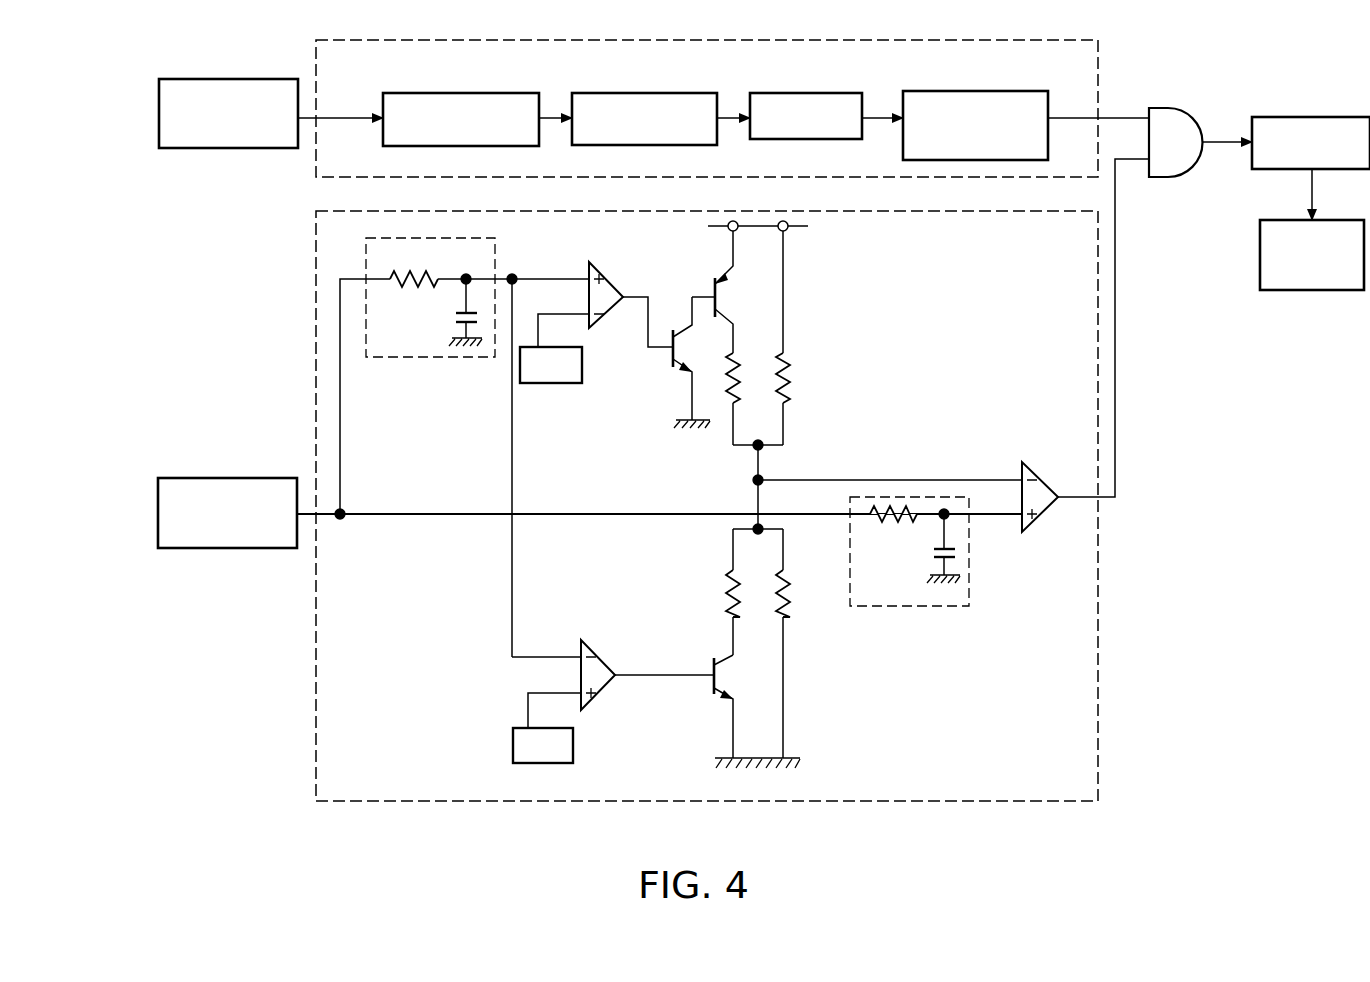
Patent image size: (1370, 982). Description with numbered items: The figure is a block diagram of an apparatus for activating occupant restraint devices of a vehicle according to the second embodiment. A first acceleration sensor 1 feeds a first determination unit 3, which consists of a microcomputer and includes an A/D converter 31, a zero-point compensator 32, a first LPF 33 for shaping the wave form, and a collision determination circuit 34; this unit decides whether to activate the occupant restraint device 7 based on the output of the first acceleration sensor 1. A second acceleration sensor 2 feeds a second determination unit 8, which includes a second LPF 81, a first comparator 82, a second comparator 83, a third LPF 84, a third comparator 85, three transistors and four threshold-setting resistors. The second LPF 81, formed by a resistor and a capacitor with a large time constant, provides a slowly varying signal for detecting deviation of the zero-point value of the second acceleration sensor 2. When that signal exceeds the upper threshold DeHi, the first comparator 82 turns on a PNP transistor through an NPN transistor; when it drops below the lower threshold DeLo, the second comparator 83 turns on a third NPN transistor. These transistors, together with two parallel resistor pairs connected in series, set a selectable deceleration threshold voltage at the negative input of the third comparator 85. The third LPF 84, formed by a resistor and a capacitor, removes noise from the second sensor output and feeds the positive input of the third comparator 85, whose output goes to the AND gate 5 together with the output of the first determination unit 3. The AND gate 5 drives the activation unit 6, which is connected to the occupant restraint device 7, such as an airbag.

The first acceleration sensor 1 is at (230, 79).
The second acceleration sensor 2 is at (228, 478).
The first determination unit 3 is at (708, 40).
The A/D converter 31 is at (455, 93).
The zero-point compensator 32 is at (638, 93).
The first LPF 33 is at (804, 93).
The collision determination circuit 34 is at (968, 91).
The AND gate 5 is at (1163, 108).
The activation unit 6 is at (1312, 117).
The occupant restraint device 7 is at (1308, 290).
The second determination unit 8 is at (903, 801).
The second LPF 81 is at (458, 357).
The first comparator 82 is at (612, 270).
The second comparator 83 is at (612, 652).
The third LPF 84 is at (937, 606).
The third comparator 85 is at (1048, 505).